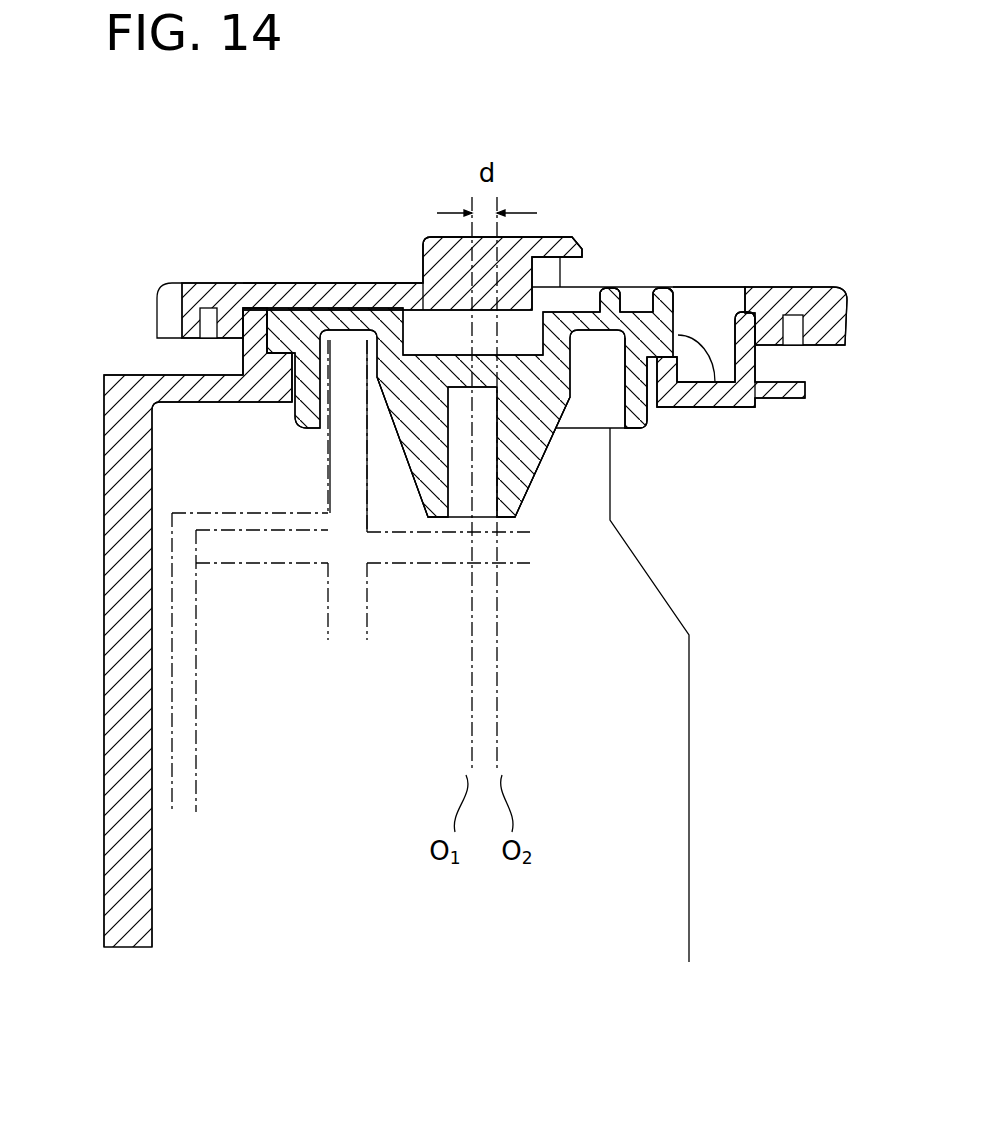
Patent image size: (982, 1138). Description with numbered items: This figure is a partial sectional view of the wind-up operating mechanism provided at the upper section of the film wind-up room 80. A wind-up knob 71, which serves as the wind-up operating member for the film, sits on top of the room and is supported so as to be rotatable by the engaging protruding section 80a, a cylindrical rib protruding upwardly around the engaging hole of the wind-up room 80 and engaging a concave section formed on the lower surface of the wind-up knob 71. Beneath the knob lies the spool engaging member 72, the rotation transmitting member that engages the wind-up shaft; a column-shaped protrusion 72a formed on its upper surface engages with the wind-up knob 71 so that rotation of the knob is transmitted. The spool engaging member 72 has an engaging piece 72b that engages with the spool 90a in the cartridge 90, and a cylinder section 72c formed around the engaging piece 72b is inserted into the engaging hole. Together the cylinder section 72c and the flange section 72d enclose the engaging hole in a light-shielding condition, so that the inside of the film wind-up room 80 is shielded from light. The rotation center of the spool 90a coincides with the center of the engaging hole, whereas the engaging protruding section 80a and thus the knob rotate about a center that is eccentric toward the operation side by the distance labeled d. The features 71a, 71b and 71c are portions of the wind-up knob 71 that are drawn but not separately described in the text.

The wind-up knob 71 is at (208, 284).
The opening of plate 71a is at (699, 298).
The boss of plate 71b is at (577, 236).
The plate portion 71c is at (330, 282).
The spool engaging member 72 is at (521, 503).
The column-shaped protrusion 72a is at (610, 286).
The engaging piece 72b is at (418, 495).
The cylinder section 72c is at (654, 426).
The flange section 72d is at (712, 397).
The film wind-up room 80 is at (104, 870).
The engaging protruding section 80a is at (243, 355).
The cartridge 90 is at (180, 815).
The spool 90a is at (345, 562).